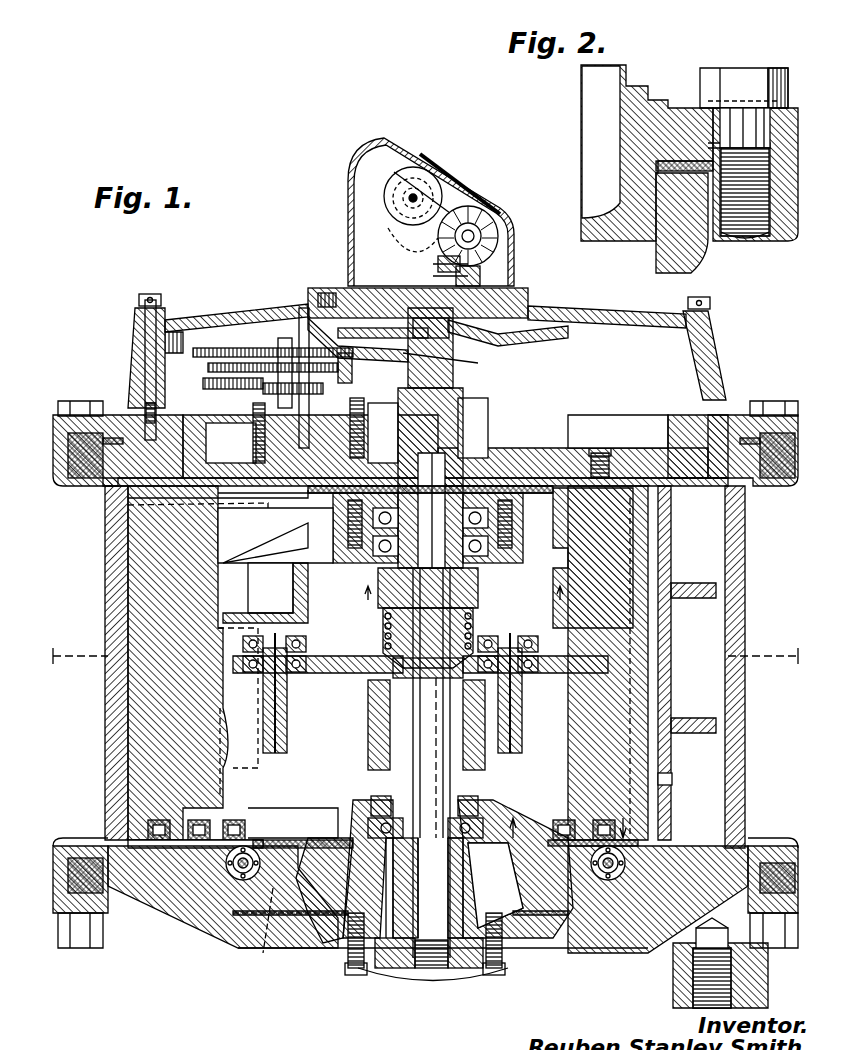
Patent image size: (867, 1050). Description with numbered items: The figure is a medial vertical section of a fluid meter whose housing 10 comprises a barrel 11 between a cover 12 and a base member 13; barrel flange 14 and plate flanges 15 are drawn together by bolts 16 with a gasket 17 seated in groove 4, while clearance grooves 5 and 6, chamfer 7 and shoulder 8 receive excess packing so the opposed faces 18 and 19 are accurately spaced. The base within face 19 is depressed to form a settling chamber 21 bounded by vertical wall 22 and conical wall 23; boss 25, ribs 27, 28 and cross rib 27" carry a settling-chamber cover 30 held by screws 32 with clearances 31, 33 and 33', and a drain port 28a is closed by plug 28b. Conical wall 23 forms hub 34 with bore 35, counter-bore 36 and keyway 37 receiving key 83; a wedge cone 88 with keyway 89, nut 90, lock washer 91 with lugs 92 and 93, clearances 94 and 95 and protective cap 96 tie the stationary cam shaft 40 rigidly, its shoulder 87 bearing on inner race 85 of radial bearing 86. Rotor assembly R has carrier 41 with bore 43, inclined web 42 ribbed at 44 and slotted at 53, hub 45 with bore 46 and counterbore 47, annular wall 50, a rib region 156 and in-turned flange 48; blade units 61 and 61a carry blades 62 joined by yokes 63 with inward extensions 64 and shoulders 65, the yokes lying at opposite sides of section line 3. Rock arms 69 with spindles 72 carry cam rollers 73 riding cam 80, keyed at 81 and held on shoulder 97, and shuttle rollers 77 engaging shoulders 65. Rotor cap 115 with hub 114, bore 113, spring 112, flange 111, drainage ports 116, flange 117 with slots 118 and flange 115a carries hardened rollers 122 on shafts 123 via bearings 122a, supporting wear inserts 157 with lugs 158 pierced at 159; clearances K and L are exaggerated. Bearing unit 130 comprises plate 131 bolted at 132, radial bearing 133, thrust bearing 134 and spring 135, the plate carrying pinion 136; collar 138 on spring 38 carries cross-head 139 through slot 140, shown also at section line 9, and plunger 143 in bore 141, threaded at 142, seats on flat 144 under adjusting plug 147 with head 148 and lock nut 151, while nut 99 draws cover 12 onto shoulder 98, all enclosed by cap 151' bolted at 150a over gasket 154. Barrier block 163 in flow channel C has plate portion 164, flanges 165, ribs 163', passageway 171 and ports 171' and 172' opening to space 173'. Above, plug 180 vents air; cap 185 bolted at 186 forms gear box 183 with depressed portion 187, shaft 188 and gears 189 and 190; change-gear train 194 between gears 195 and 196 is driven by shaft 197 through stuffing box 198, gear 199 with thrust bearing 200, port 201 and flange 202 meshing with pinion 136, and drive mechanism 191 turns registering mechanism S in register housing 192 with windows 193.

In FIG. 1, the register housing 192 is at (340, 180).
In FIG. 1, the windows 193 is at (430, 148).
In FIG. 1, the registering mechanism S is at (448, 188).
In FIG. 1, the gear 189 is at (400, 278).
In FIG. 1, the drive mechanism 191 is at (505, 285).
In FIG. 1, the cap 185 is at (235, 303).
In FIG. 1, the gear box 183 is at (180, 300).
In FIG. 1, the bolts 186 is at (130, 288).
In FIG. 1, the change-gear train 194 is at (265, 312).
In FIG. 1, the gear 195 is at (292, 300).
In FIG. 1, the shaft 197 is at (250, 355).
In FIG. 1, the gear 196 is at (344, 368).
In FIG. 1, the depressed central portion 187 is at (405, 320).
In FIG. 1, the shaft 188 is at (400, 330).
In FIG. 1, the gear 190 is at (470, 338).
In FIG. 1, the head 148 is at (475, 350).
In FIG. 1, the cap 151' is at (512, 363).
In FIG. 1, the cap bolting 150a is at (480, 378).
In FIG. 1, the lock nut 151 is at (543, 393).
In FIG. 1, the adjusting plug 147 is at (505, 405).
In FIG. 1, the nut 99 is at (505, 418).
In FIG. 1, the gasket 154 is at (540, 425).
In FIG. 1, the pinion 136 is at (500, 445).
In FIG. 1, the bolts 132 is at (530, 455).
In FIG. 1, the radial and thrust bearing unit 130 is at (500, 465).
In FIG. 1, the plate 131 is at (548, 462).
In FIG. 1, the plug 180 is at (603, 450).
In FIG. 1, the bolts 16 is at (60, 393).
In FIG. 1, the flanges 15 is at (45, 415).
In FIG. 2, the flanges 15 is at (790, 125).
In FIG. 1, the gasket 17 is at (60, 440).
In FIG. 2, the gasket 17 is at (680, 150).
In FIG. 1, the flange 14 is at (55, 478).
In FIG. 2, the flange 14 is at (788, 192).
In FIG. 1, the cap or cover member 12 is at (108, 407).
In FIG. 2, the cap or cover member 12 is at (620, 104).
In FIG. 1, the stuffing box 198 is at (235, 433).
In FIG. 1, the thrust bearing 200 is at (245, 430).
In FIG. 1, the gear 199 is at (350, 440).
In FIG. 1, the annular shoulder 98 is at (383, 437).
In FIG. 1, the internal threads 142 is at (473, 432).
In FIG. 1, the annular shoulder 8 is at (379, 380).
In FIG. 2, the annular shoulder 8 is at (690, 230).
In FIG. 1, the chamfer 7 is at (370, 385).
In FIG. 2, the chamfer 7 is at (650, 162).
In FIG. 1, the clearance groove 6 is at (341, 410).
In FIG. 2, the clearance groove 6 is at (650, 245).
In FIG. 1, the bore 141 is at (430, 633).
In FIG. 1, the thrust bearing 134 is at (593, 558).
In FIG. 1, the compression spring 135 is at (500, 540).
In FIG. 1, the radial bearing 133 is at (470, 545).
In FIG. 1, the depressing plunger 143 is at (470, 570).
In FIG. 1, the milled flat 144 is at (470, 585).
In FIG. 1, the section line 9 is at (463, 600).
In FIG. 1, the collar 138 is at (380, 548).
In FIG. 1, the hub bore 46 is at (370, 572).
In FIG. 1, the cross-head 139 is at (372, 592).
In FIG. 1, the cross-slot 140 is at (428, 638).
In FIG. 1, the compression spring 38 is at (378, 631).
In FIG. 1, the key 81 is at (428, 665).
In FIG. 1, the shoulder 97 is at (434, 758).
In FIG. 1, the shuttle rollers 77 is at (300, 635).
In FIG. 1, the shoulders 65 is at (235, 640).
In FIG. 1, the rock arms 69 is at (255, 693).
In FIG. 1, the cam 80 is at (290, 668).
In FIG. 1, the cam rollers 73 is at (288, 678).
In FIG. 1, the stub shaft 72 is at (265, 745).
In FIG. 1, the annular wall 50 is at (212, 727).
In FIG. 1, the meter housing 10 is at (88, 691).
In FIG. 1, the blades 62 is at (125, 712).
In FIG. 1, the blade unit 61a is at (140, 575).
In FIG. 1, the barrel 11 is at (100, 541).
In FIG. 2, the barrel 11 is at (683, 262).
In FIG. 1, the rotor assembly R is at (218, 515).
In FIG. 1, the face 18 is at (180, 490).
In FIG. 1, the clearance K is at (160, 500).
In FIG. 1, the clearance L is at (150, 731).
In FIG. 1, the bore 43 is at (215, 751).
In FIG. 1, the section line 3 is at (423, 649).
In FIG. 1, the gear flange 202 is at (205, 488).
In FIG. 1, the port 201 is at (238, 485).
In FIG. 1, the ribs 44 is at (275, 535).
In FIG. 1, the counterbore 47 is at (330, 494).
In FIG. 1, the web 42 is at (291, 529).
In FIG. 1, the hub 45 is at (321, 544).
In FIG. 1, the slots 53 is at (270, 587).
In FIG. 1, the rib 156 is at (298, 588).
In FIG. 1, the barrier block 163 is at (733, 663).
In FIG. 1, the arcuate plate portion 164 is at (660, 620).
In FIG. 1, the horizontal ribs 163' is at (766, 654).
In FIG. 1, the horizontal flanges 165 is at (737, 500).
In FIG. 1, the port 171' is at (698, 526).
In FIG. 1, the clearance passageway 171 is at (693, 551).
In FIG. 1, the flow channel C is at (660, 565).
In FIG. 1, the space 173' is at (765, 700).
In FIG. 1, the port 172' is at (688, 777).
In FIG. 1, the lugs 158 is at (205, 810).
In FIG. 1, the piercings 159 is at (190, 815).
In FIG. 1, the hard-metal inserts 157 is at (130, 840).
In FIG. 1, the face 19 is at (125, 835).
In FIG. 1, the carrier 41 is at (210, 768).
In FIG. 1, the annular flange 117 is at (245, 860).
In FIG. 1, the inward extensions 64 is at (240, 812).
In FIG. 1, the in-turned flange 48 is at (290, 830).
In FIG. 1, the rotor cap 115 is at (300, 835).
In FIG. 1, the groove 4 is at (567, 820).
In FIG. 2, the groove 4 is at (665, 75).
In FIG. 1, the yoke 63 is at (365, 672).
In FIG. 1, the blade unit 61 is at (360, 725).
In FIG. 1, the cam shaft 40 is at (405, 740).
In FIG. 1, the bore 113 is at (470, 775).
In FIG. 1, the compression spring 112 is at (480, 785).
In FIG. 1, the inturned flange 111 is at (375, 788).
In FIG. 1, the hub 114 is at (365, 795).
In FIG. 1, the radial bearing 86 is at (395, 800).
In FIG. 1, the annular shoulder 87 is at (440, 815).
In FIG. 1, the conical wall 23 is at (355, 860).
In FIG. 1, the drainage ports 116 is at (290, 885).
In FIG. 1, the bore 35 is at (465, 855).
In FIG. 1, the hub 34 is at (480, 880).
In FIG. 1, the conical counter-bore 36 is at (510, 888).
In FIG. 1, the inner race 85 is at (424, 883).
In FIG. 1, the keyway 37 is at (400, 850).
In FIG. 1, the clearance 94 is at (430, 865).
In FIG. 1, the key 83 is at (395, 895).
In FIG. 1, the clearance 95 is at (430, 900).
In FIG. 1, the wedge cone 88 is at (440, 960).
In FIG. 1, the lock washer 91 is at (455, 960).
In FIG. 1, the locking lug 93 is at (470, 960).
In FIG. 1, the keyway 89 is at (375, 960).
In FIG. 1, the nut 90 is at (390, 965).
In FIG. 1, the locking lug 92 is at (400, 968).
In FIG. 1, the protective cap 96 is at (410, 975).
In FIG. 1, the settling chamber 21 is at (335, 965).
In FIG. 1, the rib 28 is at (345, 968).
In FIG. 1, the drain port 28a is at (350, 968).
In FIG. 1, the plug 28b is at (360, 972).
In FIG. 1, the annular clearance 33 is at (525, 980).
In FIG. 1, the boss 25 is at (560, 945).
In FIG. 1, the rib 27 is at (571, 986).
In FIG. 1, the flush-head screws 32 is at (580, 990).
In FIG. 1, the annular clearance 33' is at (694, 963).
In FIG. 1, the base member 13 is at (150, 930).
In FIG. 1, the hardened rollers 122 is at (180, 915).
In FIG. 1, the roller bearings 122a is at (210, 855).
In FIG. 1, the shafts 123 is at (210, 868).
In FIG. 1, the slots 118 is at (242, 872).
In FIG. 1, the annular flange 115a is at (280, 907).
In FIG. 1, the vertical wall 22 is at (225, 900).
In FIG. 1, the settling-chamber cover 30 is at (235, 905).
In FIG. 1, the clearance space 31 is at (245, 910).
In FIG. 2, the clearance groove 5 is at (710, 140).